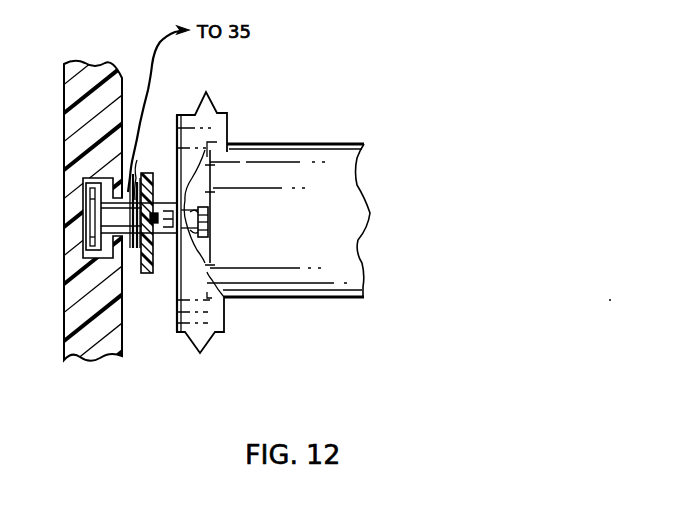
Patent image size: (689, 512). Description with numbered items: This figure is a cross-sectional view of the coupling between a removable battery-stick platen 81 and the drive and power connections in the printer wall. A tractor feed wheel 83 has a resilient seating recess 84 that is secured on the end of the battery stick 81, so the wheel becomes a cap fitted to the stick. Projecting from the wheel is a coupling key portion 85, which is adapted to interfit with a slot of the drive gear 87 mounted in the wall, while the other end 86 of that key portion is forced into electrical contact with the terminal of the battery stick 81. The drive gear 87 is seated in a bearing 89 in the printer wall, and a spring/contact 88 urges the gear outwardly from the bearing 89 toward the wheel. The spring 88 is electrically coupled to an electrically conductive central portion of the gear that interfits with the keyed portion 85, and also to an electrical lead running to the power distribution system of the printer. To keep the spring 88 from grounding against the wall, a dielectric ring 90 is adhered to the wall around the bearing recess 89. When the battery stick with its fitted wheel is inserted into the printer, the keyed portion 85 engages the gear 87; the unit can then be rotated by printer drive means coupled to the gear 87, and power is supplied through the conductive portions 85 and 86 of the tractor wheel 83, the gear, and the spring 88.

The battery-stick platen 81 is at (317, 152).
The tractor feed wheel 83 is at (220, 113).
The resilient seating recess 84 is at (228, 301).
The coupling key portion 85 is at (164, 207).
The other end of coupling key portion 86 is at (210, 217).
The drive gear 87 is at (154, 254).
The spring/contact 88 is at (143, 273).
The bearing 89 is at (88, 256).
The dielectric ring 90 is at (127, 242).